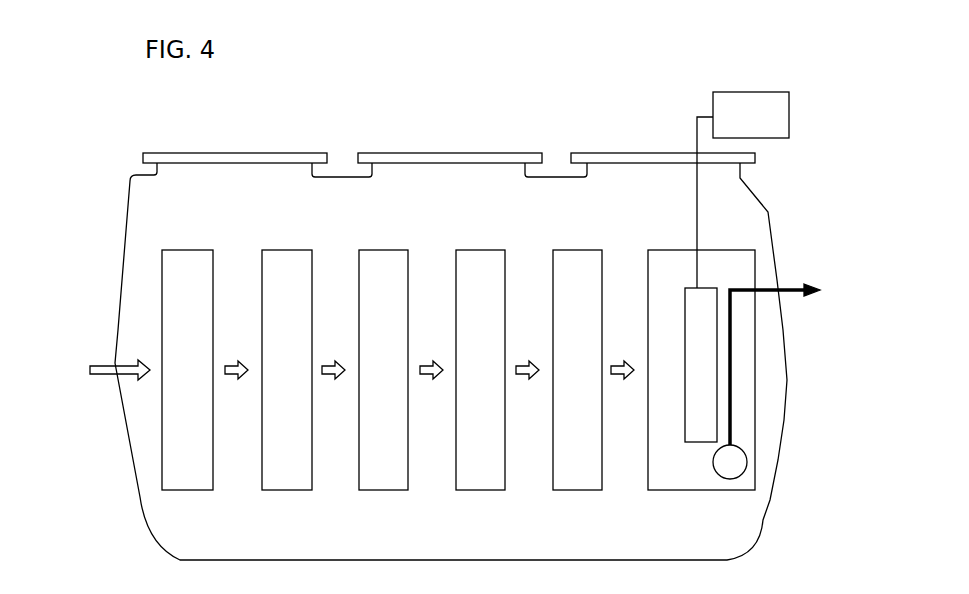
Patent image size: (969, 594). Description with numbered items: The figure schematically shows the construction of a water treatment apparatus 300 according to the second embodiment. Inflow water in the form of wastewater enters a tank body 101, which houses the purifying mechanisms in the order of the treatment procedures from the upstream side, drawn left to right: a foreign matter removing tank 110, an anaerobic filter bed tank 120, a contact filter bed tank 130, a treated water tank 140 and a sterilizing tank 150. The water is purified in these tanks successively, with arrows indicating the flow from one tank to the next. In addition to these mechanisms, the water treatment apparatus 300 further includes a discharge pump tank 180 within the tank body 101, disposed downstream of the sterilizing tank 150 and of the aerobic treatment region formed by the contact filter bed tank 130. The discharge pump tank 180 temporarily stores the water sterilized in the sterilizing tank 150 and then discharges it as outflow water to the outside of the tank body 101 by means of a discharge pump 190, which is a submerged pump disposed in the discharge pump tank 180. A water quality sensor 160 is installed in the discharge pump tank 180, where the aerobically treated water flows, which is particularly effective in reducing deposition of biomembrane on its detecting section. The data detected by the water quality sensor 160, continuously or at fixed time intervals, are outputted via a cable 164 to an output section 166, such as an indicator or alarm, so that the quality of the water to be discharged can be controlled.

The water treatment apparatus 300 is at (446, 91).
The tank body 101 is at (745, 216).
The foreign matter removing tank 110 is at (189, 247).
The anaerobic filter bed tank 120 is at (288, 247).
The contact filter bed tank 130 is at (382, 247).
The treated water tank 140 is at (481, 247).
The sterilizing tank 150 is at (563, 247).
The discharge pump tank 180 is at (658, 247).
The water quality sensor 160 is at (692, 445).
The cable 164 is at (692, 130).
The output section 166 is at (742, 91).
The discharge pump 190 is at (724, 480).